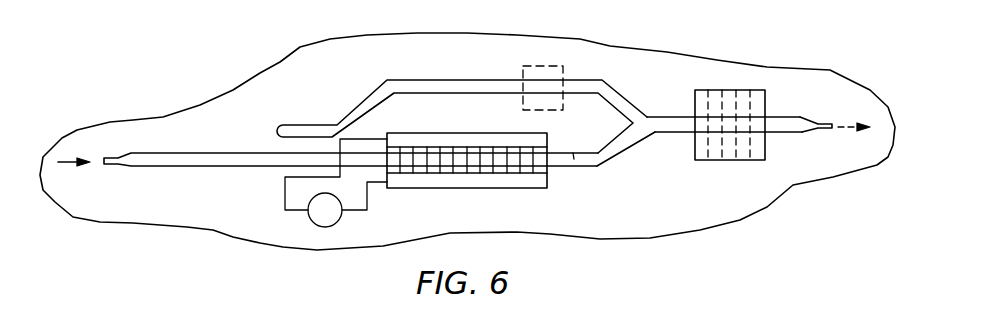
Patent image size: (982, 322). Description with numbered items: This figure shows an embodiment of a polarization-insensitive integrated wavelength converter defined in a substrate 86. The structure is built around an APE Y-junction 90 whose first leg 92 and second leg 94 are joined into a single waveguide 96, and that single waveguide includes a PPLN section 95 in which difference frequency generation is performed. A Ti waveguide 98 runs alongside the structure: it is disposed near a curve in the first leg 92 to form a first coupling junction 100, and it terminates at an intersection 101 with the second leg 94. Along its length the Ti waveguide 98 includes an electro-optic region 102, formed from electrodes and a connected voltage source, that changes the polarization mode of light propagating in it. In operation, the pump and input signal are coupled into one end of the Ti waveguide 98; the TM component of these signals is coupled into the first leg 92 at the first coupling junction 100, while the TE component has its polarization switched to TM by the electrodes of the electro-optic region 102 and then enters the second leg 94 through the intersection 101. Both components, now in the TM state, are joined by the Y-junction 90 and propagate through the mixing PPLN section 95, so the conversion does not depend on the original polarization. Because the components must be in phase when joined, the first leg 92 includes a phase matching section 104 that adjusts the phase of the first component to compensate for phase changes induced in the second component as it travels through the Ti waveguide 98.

The substrate 86 is at (713, 216).
The APE Y-junction 90 is at (645, 115).
The first leg 92 is at (437, 82).
The second leg 94 is at (603, 164).
The PPLN section 95 is at (703, 92).
The single waveguide 96 is at (788, 118).
The Ti waveguide 98 is at (200, 163).
The first coupling junction 100 is at (272, 142).
The intersection 101 is at (575, 166).
The electro-optic region 102 is at (442, 147).
The phase matching section 104 is at (552, 65).